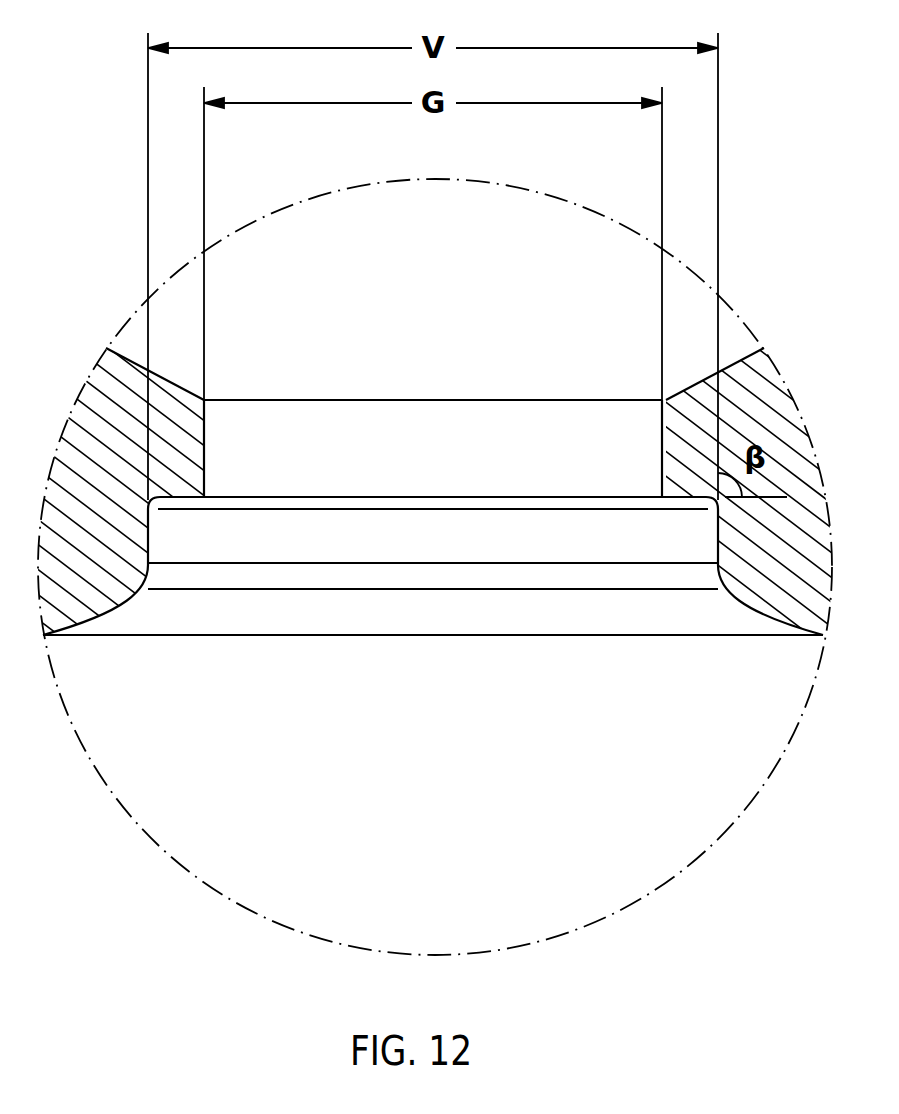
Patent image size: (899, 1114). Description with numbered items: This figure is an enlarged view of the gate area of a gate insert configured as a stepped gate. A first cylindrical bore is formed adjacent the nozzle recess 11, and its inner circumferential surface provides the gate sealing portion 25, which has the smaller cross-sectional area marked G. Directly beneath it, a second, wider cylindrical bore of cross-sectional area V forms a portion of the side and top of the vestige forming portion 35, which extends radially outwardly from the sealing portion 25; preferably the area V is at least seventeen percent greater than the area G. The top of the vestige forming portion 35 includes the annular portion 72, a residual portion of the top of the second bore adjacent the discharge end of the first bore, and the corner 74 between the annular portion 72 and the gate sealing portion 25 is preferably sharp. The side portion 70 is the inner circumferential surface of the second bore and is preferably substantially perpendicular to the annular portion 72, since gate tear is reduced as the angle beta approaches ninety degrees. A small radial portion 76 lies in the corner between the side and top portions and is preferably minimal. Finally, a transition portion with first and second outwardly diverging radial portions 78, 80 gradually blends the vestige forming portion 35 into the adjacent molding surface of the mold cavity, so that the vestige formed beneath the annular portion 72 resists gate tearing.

The nozzle recess 11 is at (728, 365).
The gate sealing portion 25 is at (662, 432).
The vestige forming portion 35 is at (648, 649).
The side portion 70 is at (718, 540).
The annular portion 72 is at (683, 499).
The corner 74 is at (211, 507).
The radial portion 76 is at (157, 502).
The first outwardly diverging radial portion 78 is at (150, 582).
The second outwardly diverging radial portion 80 is at (782, 607).